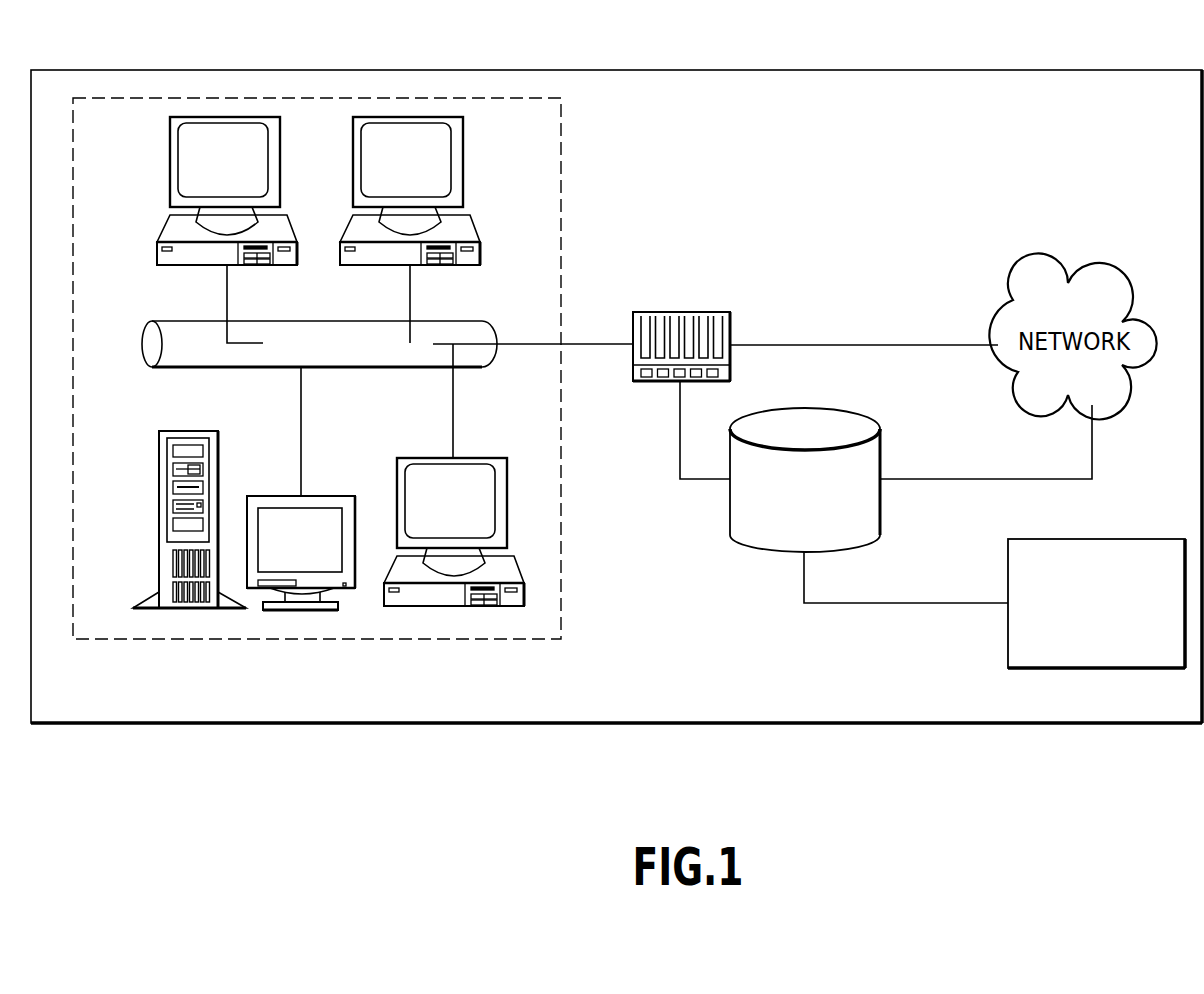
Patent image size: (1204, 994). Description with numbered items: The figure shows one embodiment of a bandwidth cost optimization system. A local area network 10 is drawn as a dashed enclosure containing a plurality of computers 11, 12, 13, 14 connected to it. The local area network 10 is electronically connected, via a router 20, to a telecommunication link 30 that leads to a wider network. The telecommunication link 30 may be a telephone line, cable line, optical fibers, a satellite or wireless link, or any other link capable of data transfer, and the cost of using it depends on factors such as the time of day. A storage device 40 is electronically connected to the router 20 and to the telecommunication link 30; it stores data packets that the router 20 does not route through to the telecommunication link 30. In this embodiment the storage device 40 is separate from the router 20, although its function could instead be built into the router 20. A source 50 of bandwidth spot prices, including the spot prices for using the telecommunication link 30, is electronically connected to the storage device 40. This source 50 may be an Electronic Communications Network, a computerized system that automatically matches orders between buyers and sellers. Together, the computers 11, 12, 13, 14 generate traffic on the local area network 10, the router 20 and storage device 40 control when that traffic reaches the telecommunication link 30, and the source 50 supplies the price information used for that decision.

The local area network 10 is at (315, 640).
The computer 11 is at (221, 116).
The computer 12 is at (405, 116).
The computer 13 is at (159, 500).
The computer 14 is at (474, 458).
The router 20 is at (680, 312).
The telecommunication link 30 is at (845, 345).
The storage device 40 is at (765, 551).
The source of bandwidth spot prices 50 is at (1096, 670).